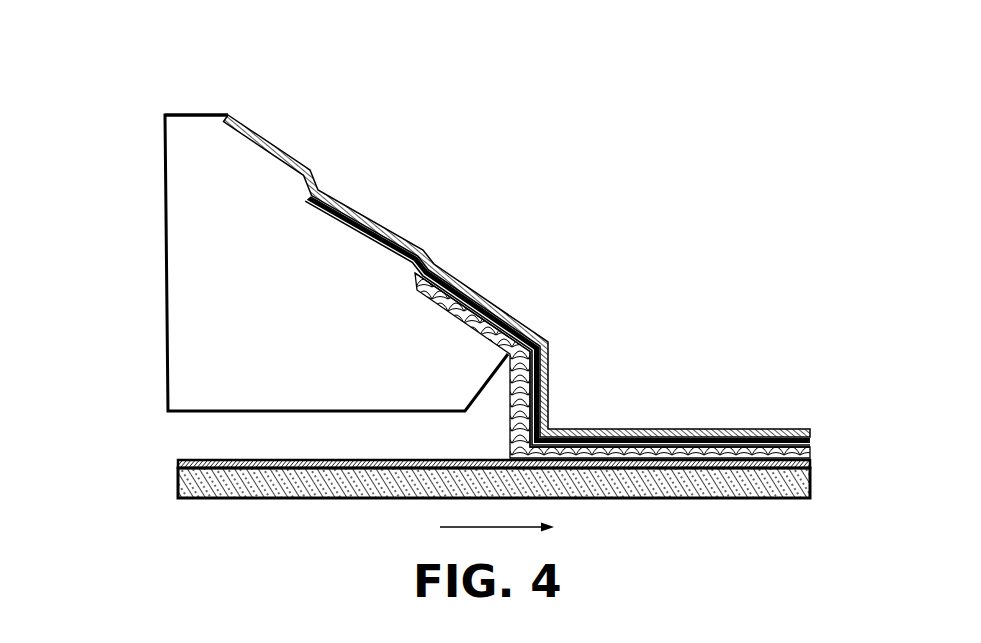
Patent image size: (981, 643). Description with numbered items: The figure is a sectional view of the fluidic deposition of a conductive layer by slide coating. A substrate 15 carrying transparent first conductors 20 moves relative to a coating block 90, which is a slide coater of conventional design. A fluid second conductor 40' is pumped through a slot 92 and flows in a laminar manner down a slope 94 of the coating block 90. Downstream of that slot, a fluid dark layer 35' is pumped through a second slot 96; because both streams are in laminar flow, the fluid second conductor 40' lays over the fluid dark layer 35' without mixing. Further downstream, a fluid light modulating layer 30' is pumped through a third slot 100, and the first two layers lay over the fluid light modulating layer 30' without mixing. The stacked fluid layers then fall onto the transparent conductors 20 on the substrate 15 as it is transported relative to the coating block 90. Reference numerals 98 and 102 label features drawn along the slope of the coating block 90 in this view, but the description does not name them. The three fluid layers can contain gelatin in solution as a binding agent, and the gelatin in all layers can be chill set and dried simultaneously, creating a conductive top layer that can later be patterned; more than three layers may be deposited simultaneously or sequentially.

The substrate 15 is at (178, 482).
The transparent first conductors 20 is at (178, 462).
The fluid light modulating layer 30' is at (484, 503).
The fluid dark layer 35' is at (617, 365).
The fluid second conductor 40' is at (537, 237).
The coating block 90 is at (170, 229).
The slot 92 is at (228, 116).
The slope 94 is at (278, 158).
The second slot 96 is at (322, 201).
The film layer 98 is at (360, 232).
The third slot 100 is at (415, 282).
The foam layer 102 is at (462, 313).